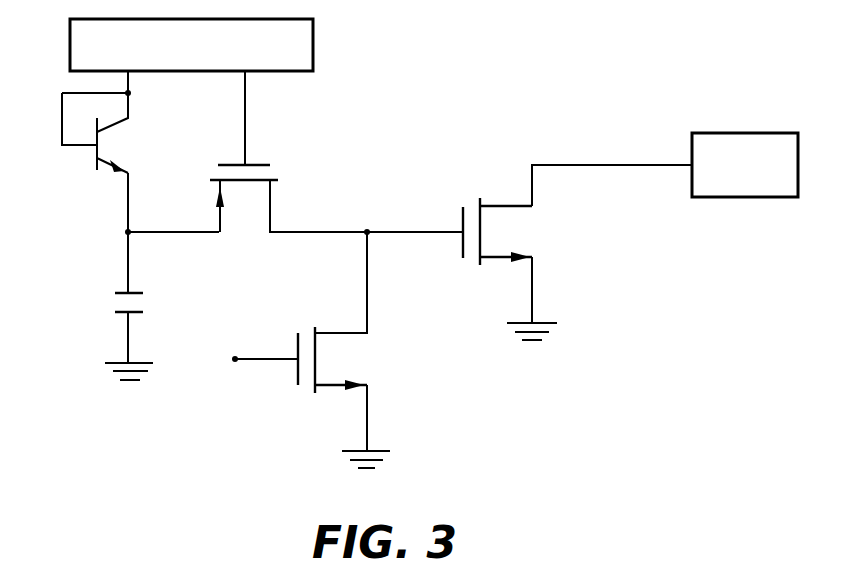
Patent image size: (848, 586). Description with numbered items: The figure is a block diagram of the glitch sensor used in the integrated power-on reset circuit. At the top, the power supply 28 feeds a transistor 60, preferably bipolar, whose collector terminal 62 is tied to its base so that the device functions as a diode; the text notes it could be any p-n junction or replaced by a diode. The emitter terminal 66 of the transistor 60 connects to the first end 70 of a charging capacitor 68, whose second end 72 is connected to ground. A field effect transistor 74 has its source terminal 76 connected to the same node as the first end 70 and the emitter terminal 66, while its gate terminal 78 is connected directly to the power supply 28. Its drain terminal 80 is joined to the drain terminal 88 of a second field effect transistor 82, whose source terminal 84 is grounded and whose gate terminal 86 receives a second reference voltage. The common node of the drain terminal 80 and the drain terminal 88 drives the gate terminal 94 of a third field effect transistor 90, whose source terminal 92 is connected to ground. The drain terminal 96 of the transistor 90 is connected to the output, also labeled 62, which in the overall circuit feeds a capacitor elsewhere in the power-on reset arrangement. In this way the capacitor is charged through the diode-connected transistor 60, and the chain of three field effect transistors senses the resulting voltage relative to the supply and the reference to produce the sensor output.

The power supply 28 is at (70, 43).
The transistor 60 is at (117, 143).
The collector terminal 62 is at (130, 105).
The emitter terminal 66 is at (128, 183).
The charging capacitor 68 is at (115, 303).
The first end 70 is at (128, 265).
The second end 72 is at (128, 332).
The transistor 74 is at (243, 218).
The source terminal 76 is at (217, 218).
The gate terminal 78 is at (243, 98).
The drain terminal 80 is at (270, 220).
The transistor 82 is at (347, 357).
The source terminal 84 is at (367, 410).
The gate terminal 86 is at (267, 360).
The drain terminal 88 is at (367, 312).
The transistor 90 is at (512, 230).
The source terminal 92 is at (532, 283).
The gate terminal 94 is at (402, 230).
The drain terminal 96 is at (532, 185).